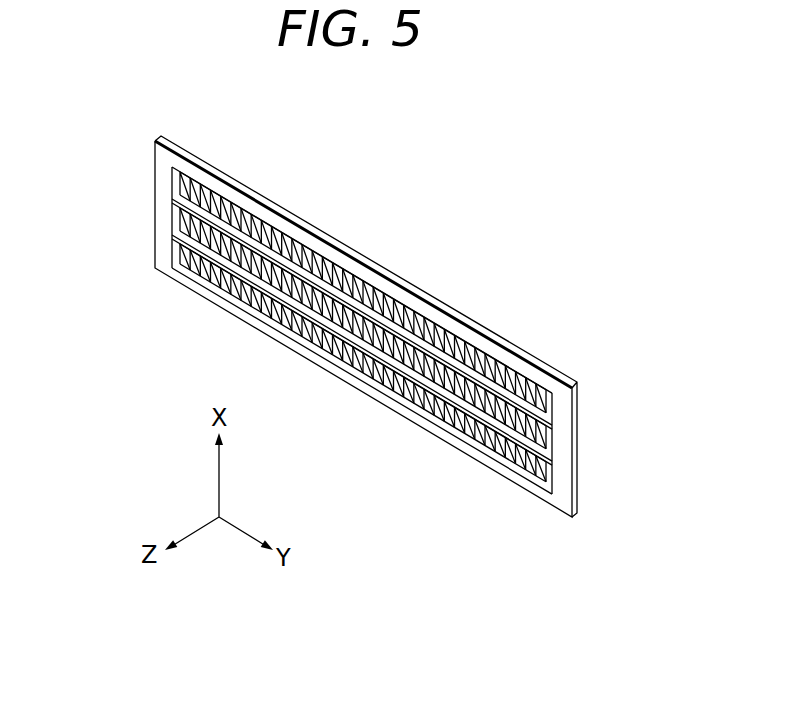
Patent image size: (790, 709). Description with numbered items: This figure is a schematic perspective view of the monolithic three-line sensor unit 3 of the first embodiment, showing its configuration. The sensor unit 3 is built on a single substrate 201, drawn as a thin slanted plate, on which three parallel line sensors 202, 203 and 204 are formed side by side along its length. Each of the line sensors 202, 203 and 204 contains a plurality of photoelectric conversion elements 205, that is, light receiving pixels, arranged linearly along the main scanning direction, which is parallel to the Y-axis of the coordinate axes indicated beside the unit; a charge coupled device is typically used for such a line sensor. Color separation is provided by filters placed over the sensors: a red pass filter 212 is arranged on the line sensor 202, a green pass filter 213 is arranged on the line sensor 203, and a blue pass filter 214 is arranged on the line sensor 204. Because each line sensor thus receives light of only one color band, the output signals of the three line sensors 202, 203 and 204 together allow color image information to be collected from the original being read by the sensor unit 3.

The monolithic 3-line sensor unit 3 is at (594, 388).
The substrate 201 is at (575, 519).
The line sensor 202 is at (548, 410).
The line sensor 203 is at (548, 446).
The line sensor 204 is at (548, 481).
The photoelectric conversion element 205 is at (184, 186).
The red pass filter 212 is at (172, 184).
The green pass filter 213 is at (172, 219).
The blue pass filter 214 is at (172, 254).